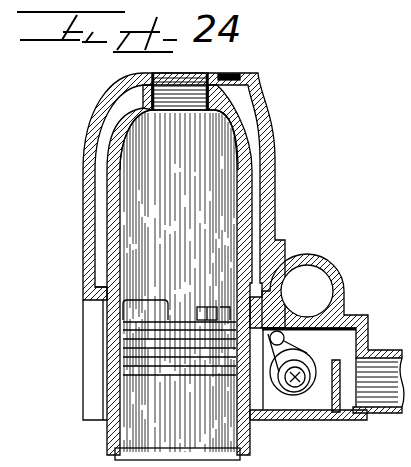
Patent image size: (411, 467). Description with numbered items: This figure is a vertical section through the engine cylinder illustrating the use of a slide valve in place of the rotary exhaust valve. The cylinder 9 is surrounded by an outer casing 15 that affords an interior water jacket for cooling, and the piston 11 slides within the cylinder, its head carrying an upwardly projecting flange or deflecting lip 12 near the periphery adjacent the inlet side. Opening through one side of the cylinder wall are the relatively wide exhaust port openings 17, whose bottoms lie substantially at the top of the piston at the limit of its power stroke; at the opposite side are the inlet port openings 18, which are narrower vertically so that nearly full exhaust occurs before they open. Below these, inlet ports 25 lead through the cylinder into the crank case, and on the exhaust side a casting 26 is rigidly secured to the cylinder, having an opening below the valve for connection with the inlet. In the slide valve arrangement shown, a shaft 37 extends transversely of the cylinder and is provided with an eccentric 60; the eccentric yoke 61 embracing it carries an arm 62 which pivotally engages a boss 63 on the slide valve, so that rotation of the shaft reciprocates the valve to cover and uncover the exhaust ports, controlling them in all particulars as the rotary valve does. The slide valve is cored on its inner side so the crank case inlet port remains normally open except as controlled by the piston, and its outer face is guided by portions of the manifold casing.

The cylinder 9 is at (250, 161).
The outer casing 15 is at (274, 186).
The piston 11 is at (145, 423).
The exhaust port openings 17 is at (208, 307).
The inlet port openings 18 is at (103, 332).
The deflecting lip 12 is at (106, 300).
The inlet ports 25 is at (370, 302).
The casting 26 is at (72, 336).
The boss 63 is at (270, 295).
The arm 62 is at (263, 332).
The eccentric yoke 61 is at (290, 348).
The eccentric 60 is at (268, 420).
The shaft 37 is at (298, 385).